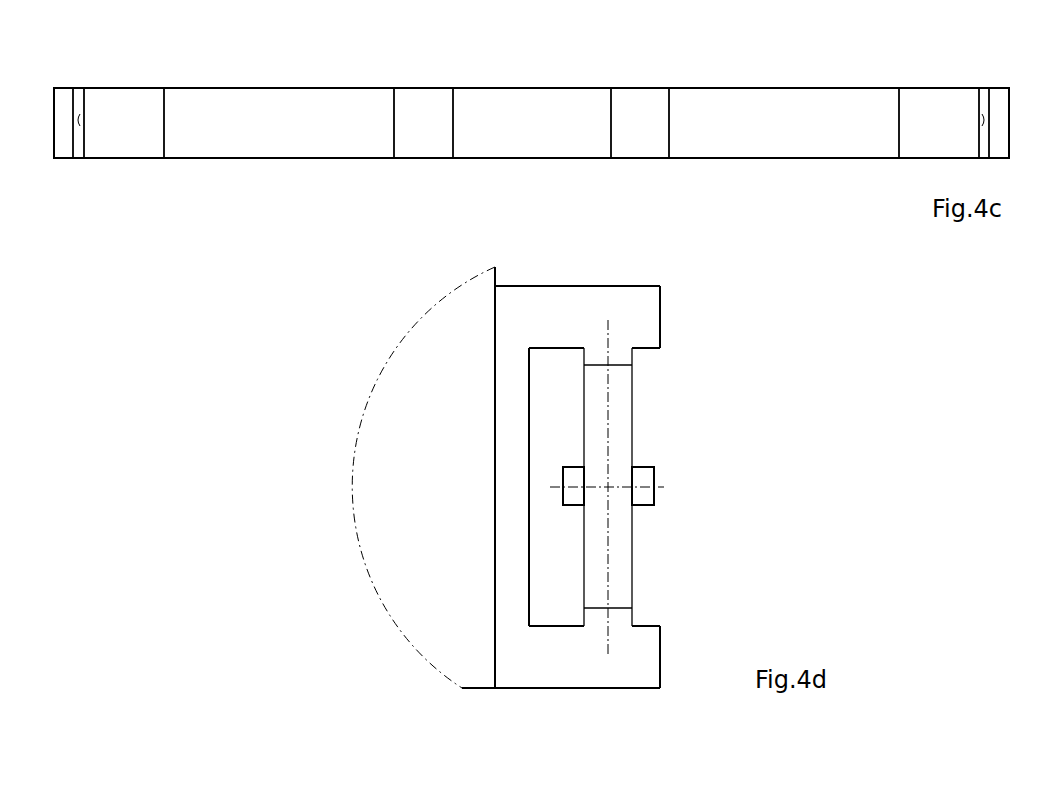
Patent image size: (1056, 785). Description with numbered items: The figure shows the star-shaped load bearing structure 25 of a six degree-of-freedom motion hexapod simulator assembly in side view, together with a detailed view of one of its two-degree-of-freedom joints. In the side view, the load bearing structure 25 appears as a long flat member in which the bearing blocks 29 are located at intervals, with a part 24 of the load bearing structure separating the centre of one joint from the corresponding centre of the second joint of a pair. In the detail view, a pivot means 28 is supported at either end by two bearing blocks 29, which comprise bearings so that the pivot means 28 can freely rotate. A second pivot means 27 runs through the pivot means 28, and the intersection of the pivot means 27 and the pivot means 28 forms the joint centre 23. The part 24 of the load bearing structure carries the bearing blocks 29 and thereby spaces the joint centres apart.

In FIG. 4D, the joint centre 23 is at (618, 482).
In FIG. 4C, the part of the load bearing structure 24 is at (531, 102).
In FIG. 4D, the part of the load bearing structure 24 is at (508, 378).
In FIG. 4C, the load bearing structure 25 is at (236, 102).
In FIG. 4D, the second pivot means 27 is at (645, 478).
In FIG. 4D, the pivot means 28 is at (608, 567).
In FIG. 4C, the bearing blocks 29 is at (64, 102).
In FIG. 4D, the bearing blocks 29 is at (646, 304).